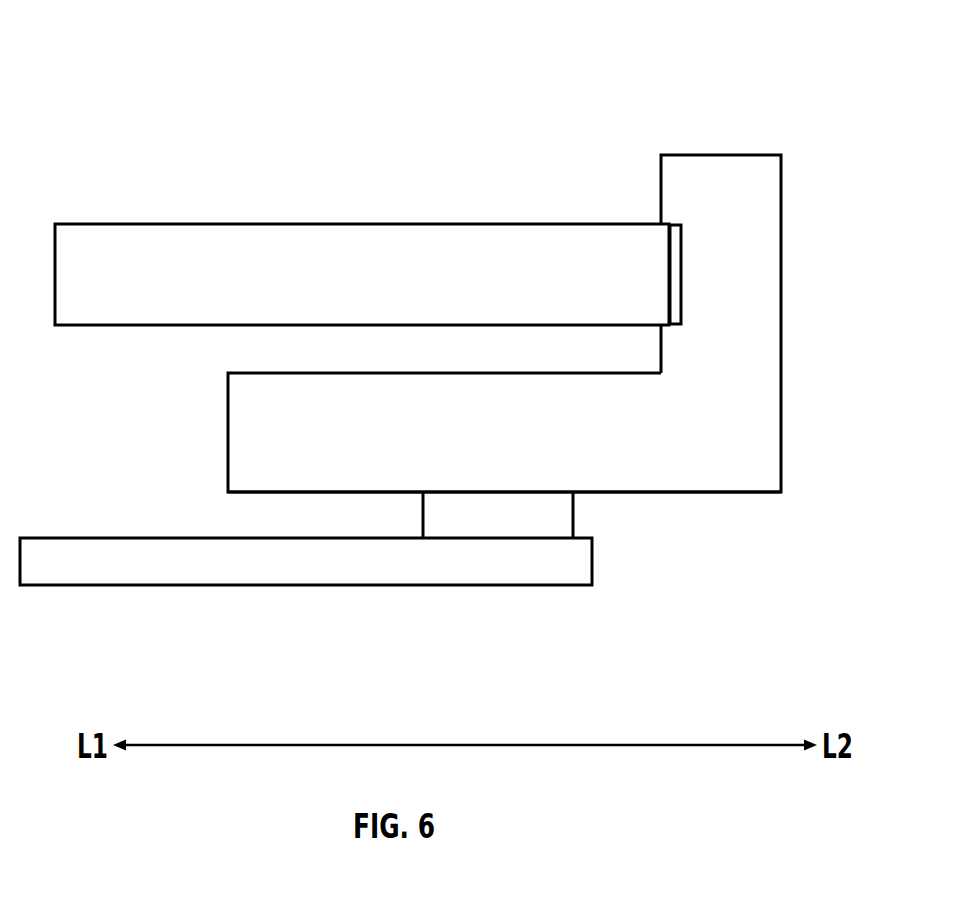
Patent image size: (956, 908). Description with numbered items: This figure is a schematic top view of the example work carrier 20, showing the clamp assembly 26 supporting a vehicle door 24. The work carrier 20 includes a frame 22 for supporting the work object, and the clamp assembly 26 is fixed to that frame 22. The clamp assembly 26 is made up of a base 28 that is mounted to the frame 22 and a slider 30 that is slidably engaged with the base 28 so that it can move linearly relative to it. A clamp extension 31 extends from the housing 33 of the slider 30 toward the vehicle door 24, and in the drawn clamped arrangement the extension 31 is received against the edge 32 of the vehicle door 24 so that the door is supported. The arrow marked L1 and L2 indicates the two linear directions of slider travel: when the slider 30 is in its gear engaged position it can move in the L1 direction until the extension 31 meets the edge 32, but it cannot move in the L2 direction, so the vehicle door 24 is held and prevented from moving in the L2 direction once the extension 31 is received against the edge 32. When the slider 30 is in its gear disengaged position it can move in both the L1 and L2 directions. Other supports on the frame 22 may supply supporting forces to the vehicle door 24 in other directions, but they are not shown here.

The work carrier 20 is at (146, 106).
The frame 22 is at (515, 568).
The vehicle door 24 is at (373, 230).
The clamp assembly 26 is at (480, 357).
The base 28 is at (561, 510).
The slider 30 is at (246, 420).
The clamp extension 31 is at (767, 290).
The edge 32 is at (673, 270).
The housing 33 is at (635, 397).